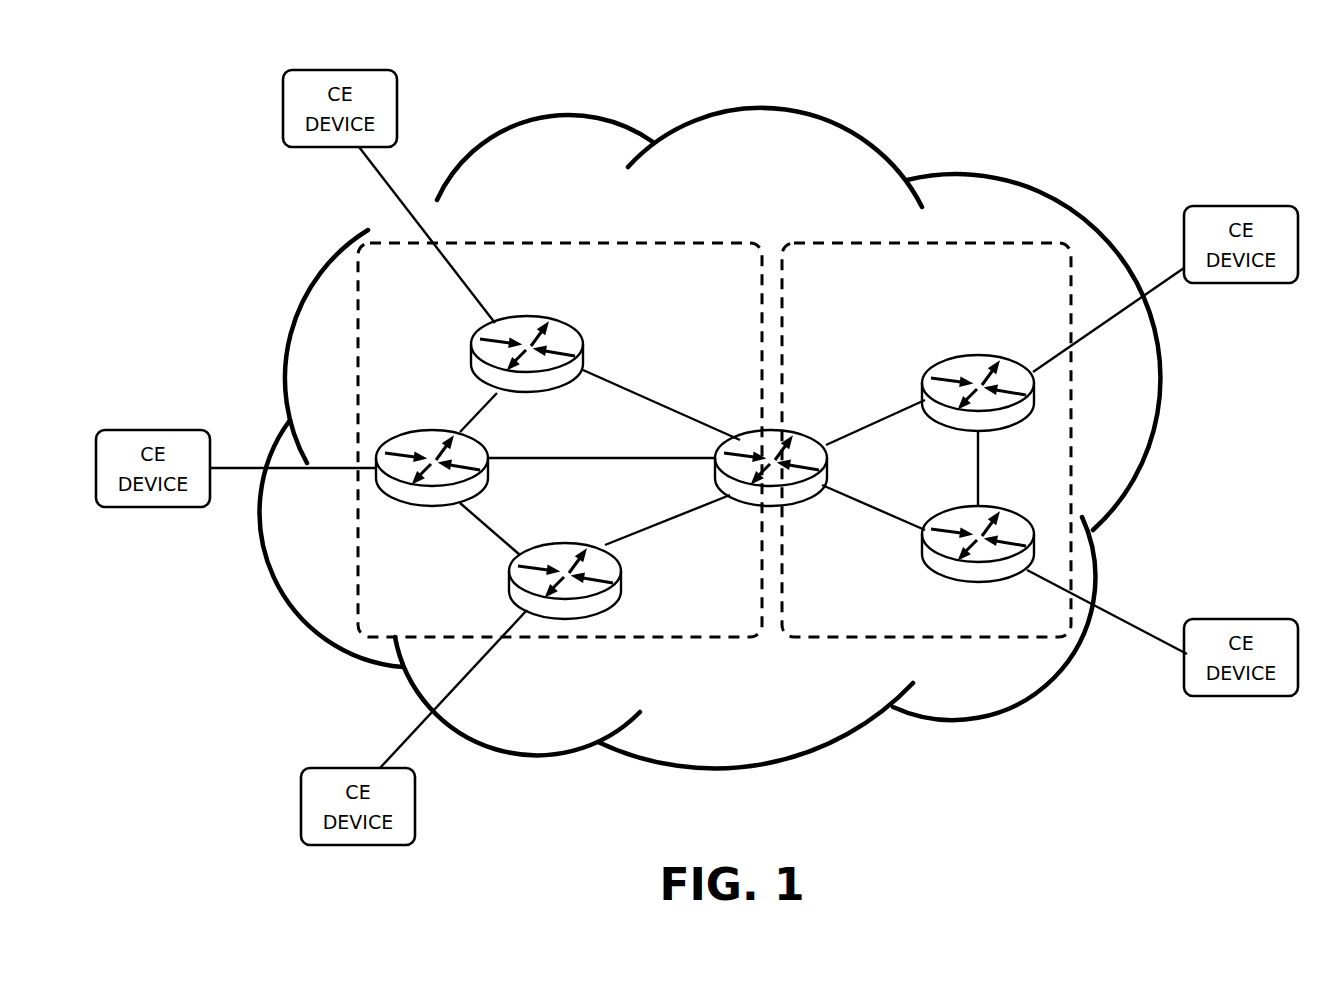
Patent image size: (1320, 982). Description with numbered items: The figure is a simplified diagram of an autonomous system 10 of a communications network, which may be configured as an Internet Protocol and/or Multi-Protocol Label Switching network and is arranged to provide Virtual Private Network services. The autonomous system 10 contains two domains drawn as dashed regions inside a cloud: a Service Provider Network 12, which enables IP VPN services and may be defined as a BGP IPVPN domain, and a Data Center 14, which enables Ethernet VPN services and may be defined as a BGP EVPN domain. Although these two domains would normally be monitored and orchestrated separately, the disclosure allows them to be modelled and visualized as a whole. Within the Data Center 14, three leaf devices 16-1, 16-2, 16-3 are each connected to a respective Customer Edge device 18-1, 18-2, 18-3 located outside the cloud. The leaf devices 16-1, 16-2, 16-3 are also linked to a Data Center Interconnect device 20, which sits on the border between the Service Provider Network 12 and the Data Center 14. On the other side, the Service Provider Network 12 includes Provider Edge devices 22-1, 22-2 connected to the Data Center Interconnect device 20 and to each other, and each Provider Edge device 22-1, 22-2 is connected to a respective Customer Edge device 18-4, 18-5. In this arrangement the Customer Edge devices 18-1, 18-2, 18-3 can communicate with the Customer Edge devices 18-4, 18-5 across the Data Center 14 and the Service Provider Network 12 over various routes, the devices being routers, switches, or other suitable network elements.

The autonomous system 10 is at (745, 108).
The Service Provider Network 12 is at (926, 440).
The Data Center 14 is at (560, 440).
The leaf device 16-1 is at (412, 508).
The leaf device 16-2 is at (470, 340).
The leaf device 16-3 is at (622, 580).
The Customer Edge device 18-1 is at (172, 430).
The Customer Edge device 18-2 is at (343, 68).
The Customer Edge device 18-3 is at (338, 768).
The Customer Edge device 18-4 is at (1215, 207).
The Customer Edge device 18-5 is at (1233, 620).
The Data Center Interconnect device 20 is at (742, 432).
The Provider Edge device 22-1 is at (922, 375).
The Provider Edge device 22-2 is at (922, 560).